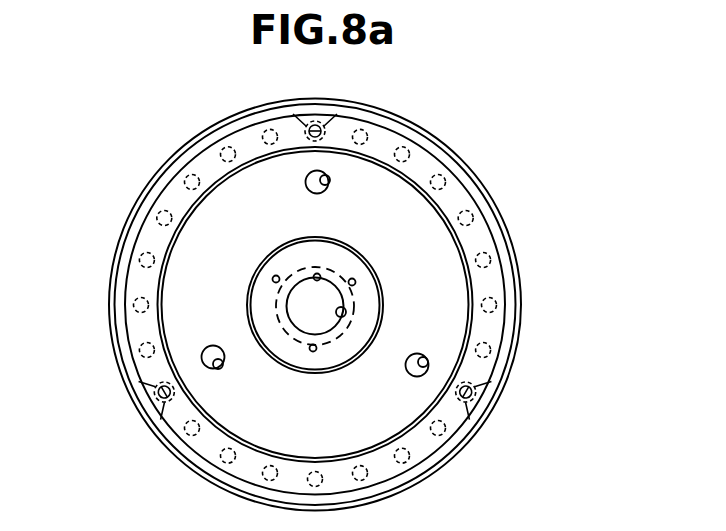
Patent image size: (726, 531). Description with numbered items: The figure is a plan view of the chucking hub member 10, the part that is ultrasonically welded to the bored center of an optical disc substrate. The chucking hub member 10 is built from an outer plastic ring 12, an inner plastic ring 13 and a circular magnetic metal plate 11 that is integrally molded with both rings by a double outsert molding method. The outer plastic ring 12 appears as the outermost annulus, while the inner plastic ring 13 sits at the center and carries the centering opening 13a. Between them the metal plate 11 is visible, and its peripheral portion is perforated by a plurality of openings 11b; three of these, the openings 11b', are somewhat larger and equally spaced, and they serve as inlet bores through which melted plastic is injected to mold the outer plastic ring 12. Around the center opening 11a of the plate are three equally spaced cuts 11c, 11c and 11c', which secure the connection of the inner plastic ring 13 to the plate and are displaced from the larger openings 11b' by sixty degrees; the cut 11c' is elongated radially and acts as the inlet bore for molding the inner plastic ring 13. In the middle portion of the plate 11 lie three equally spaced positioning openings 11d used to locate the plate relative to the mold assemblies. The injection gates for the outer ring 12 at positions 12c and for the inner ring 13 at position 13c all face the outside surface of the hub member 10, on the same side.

The chucking hub member 10 is at (523, 322).
The circular magnetic metal plate 11 is at (112, 325).
The center opening 11a is at (318, 276).
The openings 11b is at (300, 305).
The larger openings 11b' is at (310, 270).
The cuts 11c is at (374, 343).
The elongated cut 11c' is at (260, 243).
The positioning openings 11d is at (330, 185).
The outer plastic ring 12 is at (370, 505).
The injection gate positions for outer plastic ring 12c is at (306, 122).
The inner plastic ring 13 is at (348, 347).
The centering opening 13a is at (346, 312).
The injection gate position for inner plastic ring 13c is at (272, 283).